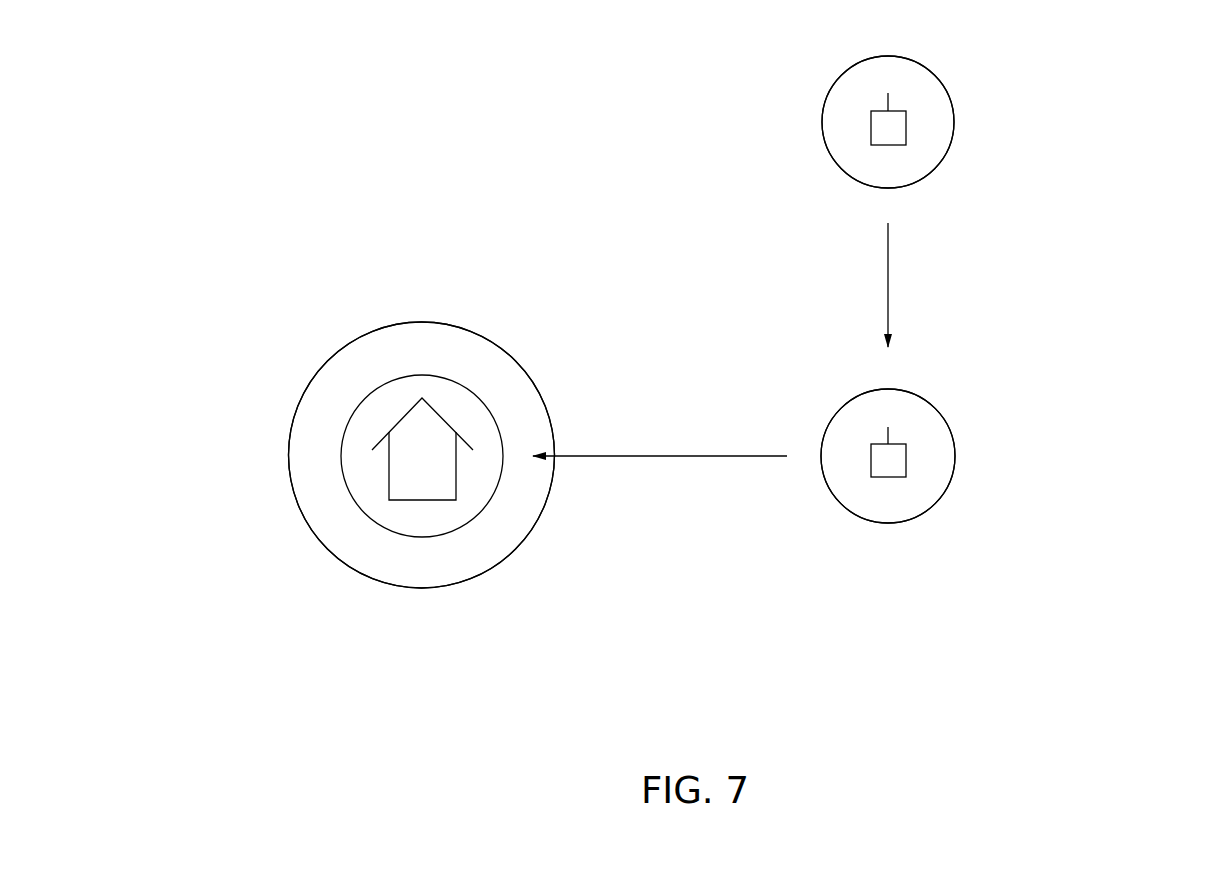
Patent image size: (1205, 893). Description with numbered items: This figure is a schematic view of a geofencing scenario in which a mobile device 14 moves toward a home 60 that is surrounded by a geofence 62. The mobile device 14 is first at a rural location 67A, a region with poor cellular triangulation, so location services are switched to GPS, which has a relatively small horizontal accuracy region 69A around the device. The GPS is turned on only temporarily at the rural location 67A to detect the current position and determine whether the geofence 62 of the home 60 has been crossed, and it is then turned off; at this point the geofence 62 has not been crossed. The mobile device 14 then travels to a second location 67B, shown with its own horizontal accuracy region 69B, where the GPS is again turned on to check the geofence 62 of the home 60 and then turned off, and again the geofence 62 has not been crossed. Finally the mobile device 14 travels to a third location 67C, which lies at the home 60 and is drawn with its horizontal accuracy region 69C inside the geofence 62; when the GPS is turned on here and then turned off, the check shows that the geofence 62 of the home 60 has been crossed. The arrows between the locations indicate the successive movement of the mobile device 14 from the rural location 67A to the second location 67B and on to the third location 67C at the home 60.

The rural location 67A is at (1006, 55).
The location 67B is at (1006, 385).
The location 67C is at (312, 287).
The mobile device 14 is at (906, 127).
The horizontal accuracy region 69A is at (935, 170).
The horizontal accuracy region 69B is at (935, 503).
The horizontal accuracy region 69C is at (347, 430).
The geofence 62 is at (342, 562).
The home 60 is at (438, 474).